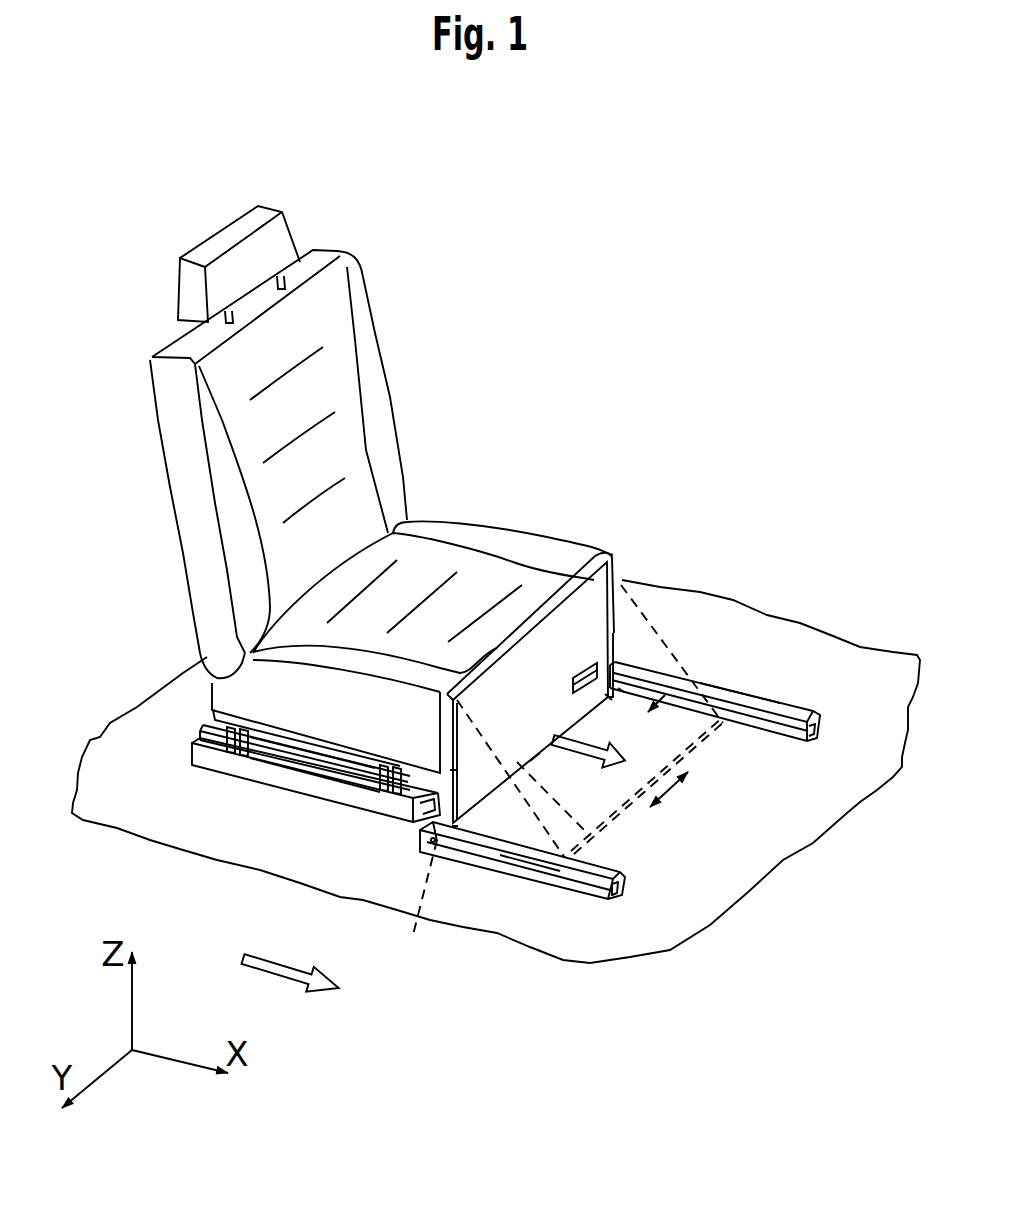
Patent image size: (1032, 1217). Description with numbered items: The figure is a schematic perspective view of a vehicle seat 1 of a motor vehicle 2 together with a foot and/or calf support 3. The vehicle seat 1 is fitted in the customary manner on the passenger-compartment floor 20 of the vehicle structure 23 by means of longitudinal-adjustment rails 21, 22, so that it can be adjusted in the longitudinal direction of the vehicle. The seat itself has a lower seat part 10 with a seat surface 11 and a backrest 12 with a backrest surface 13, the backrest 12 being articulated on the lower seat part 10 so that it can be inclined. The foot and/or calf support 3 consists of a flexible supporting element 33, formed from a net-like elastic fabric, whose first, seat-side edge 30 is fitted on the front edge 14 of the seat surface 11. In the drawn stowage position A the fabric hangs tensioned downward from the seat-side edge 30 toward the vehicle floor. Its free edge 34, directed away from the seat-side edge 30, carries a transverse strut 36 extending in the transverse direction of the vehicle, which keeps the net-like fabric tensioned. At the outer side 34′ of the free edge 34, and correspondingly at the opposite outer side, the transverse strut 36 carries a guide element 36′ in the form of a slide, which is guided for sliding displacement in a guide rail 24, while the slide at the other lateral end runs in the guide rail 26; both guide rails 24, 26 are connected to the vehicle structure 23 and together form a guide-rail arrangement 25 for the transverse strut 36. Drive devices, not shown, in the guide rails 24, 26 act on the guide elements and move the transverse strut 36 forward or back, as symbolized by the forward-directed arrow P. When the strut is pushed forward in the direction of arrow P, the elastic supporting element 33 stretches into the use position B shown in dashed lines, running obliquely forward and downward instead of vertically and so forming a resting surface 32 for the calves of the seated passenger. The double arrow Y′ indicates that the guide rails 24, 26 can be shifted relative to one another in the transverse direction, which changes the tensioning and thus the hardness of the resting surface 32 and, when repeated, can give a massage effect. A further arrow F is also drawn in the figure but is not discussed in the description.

The vehicle seat 1 is at (606, 317).
The motor vehicle 2 is at (105, 838).
The foot and/or calf support 3 is at (622, 592).
The lower seat part 10 is at (496, 518).
The seat surface 11 is at (413, 585).
The backrest 12 is at (395, 390).
The backrest surface 13 is at (328, 370).
The front edge 14 is at (548, 614).
The passenger-compartment floor 20 is at (392, 860).
The longitudinal-adjustment rail 21 is at (280, 777).
The longitudinal-adjustment rail 22 is at (614, 662).
The vehicle structure 23 is at (258, 876).
The guide rail 24 is at (772, 707).
The guide-rail arrangement 25 is at (630, 903).
The guide rail 26 is at (578, 888).
The seat-side edge 30 is at (420, 685).
The resting surface 32 is at (707, 675).
The flexible supporting element 33 is at (455, 770).
The free edge 34 is at (536, 757).
The outer side 34′ is at (612, 699).
The transverse strut 36 is at (575, 850).
The guide element 36′ is at (621, 690).
The stowage position A is at (494, 815).
The use position B is at (632, 810).
The double arrow Y′ is at (668, 790).
The forward-directed arrow P is at (598, 762).
The force direction F is at (290, 960).